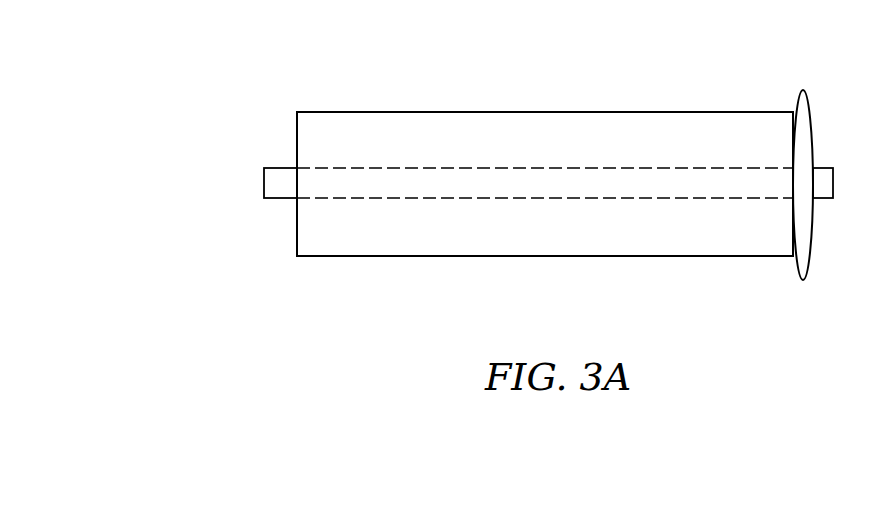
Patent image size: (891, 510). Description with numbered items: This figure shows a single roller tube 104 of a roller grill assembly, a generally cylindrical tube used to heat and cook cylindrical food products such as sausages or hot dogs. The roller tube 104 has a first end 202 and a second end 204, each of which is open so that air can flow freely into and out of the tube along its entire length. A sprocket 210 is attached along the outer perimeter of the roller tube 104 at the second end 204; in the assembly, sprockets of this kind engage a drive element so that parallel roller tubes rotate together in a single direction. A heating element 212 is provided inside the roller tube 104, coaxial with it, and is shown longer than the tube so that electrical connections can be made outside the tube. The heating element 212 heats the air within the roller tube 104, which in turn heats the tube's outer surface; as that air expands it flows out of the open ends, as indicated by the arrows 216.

The roller tube 104 is at (572, 112).
The first end 202 is at (320, 257).
The second end 204 is at (745, 258).
The sprocket 210 is at (805, 90).
The heating element 212 is at (264, 182).
The arrows 216 is at (280, 129).